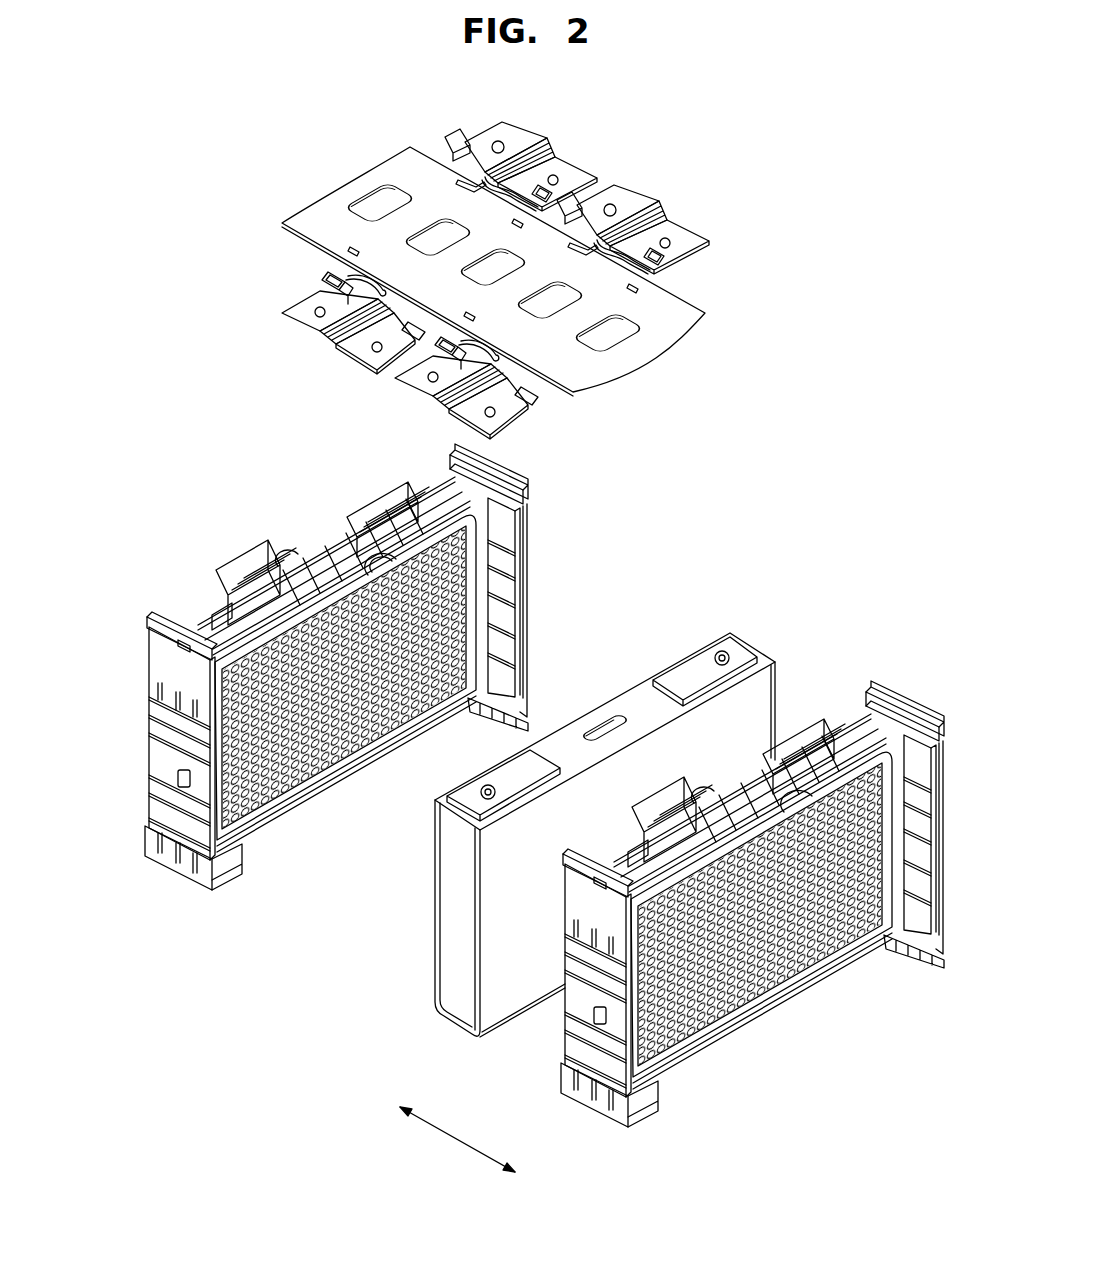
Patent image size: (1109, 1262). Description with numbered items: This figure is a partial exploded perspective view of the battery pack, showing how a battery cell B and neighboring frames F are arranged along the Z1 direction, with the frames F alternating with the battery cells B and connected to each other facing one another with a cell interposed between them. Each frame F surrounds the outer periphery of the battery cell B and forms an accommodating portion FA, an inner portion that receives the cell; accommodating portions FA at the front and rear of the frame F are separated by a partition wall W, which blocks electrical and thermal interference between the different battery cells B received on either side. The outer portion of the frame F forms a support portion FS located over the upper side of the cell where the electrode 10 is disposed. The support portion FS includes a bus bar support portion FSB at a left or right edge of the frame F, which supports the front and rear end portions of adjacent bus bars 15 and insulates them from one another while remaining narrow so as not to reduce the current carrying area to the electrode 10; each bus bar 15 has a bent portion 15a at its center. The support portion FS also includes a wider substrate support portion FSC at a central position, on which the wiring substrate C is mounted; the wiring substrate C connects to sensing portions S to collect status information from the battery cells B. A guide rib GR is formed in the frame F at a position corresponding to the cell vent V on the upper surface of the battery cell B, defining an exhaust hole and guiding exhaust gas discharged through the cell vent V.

The wiring substrate C is at (352, 192).
The sensing portion S is at (334, 235).
The bus bar 15 is at (502, 278).
The bent portion 15a is at (660, 193).
The frame F is at (532, 470).
The support portion FS is at (566, 771).
The substrate support portion FSC is at (544, 766).
The bus bar support portion FSB is at (225, 615).
The guide rib GR is at (382, 575).
The electrode 10 is at (688, 662).
The battery cell B is at (634, 800).
The cell vent V is at (600, 735).
The accommodating portion FA is at (526, 771).
The partition wall W is at (270, 796).
The Z1 direction Z1 is at (457, 1139).